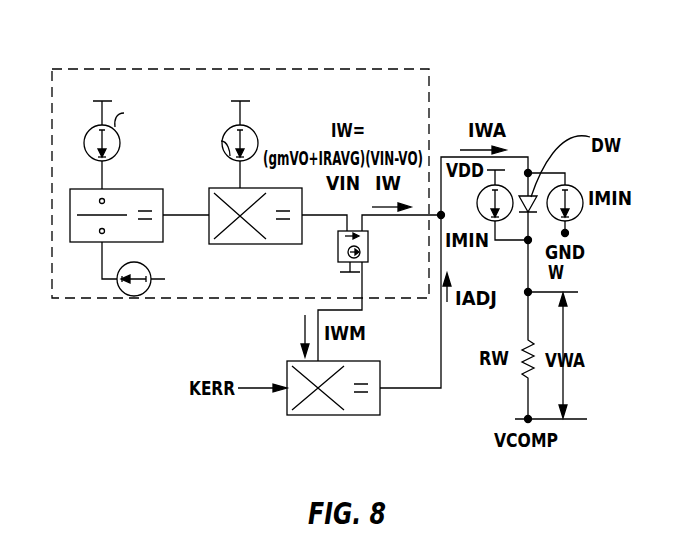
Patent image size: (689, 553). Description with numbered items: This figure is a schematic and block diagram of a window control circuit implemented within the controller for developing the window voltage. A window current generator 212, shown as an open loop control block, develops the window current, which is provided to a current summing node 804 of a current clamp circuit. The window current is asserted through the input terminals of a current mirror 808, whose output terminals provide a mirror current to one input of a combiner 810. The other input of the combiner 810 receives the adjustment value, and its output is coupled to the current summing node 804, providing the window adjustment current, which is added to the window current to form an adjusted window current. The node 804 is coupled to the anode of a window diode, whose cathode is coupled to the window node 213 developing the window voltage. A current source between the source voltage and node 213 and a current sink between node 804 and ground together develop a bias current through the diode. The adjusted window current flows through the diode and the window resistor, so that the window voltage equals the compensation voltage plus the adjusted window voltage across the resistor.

The window current generator 212 is at (208, 68).
The current summing node 804 is at (441, 212).
The current mirror 808 is at (368, 158).
The combiner 810 is at (368, 361).
The window node 213 is at (527, 291).